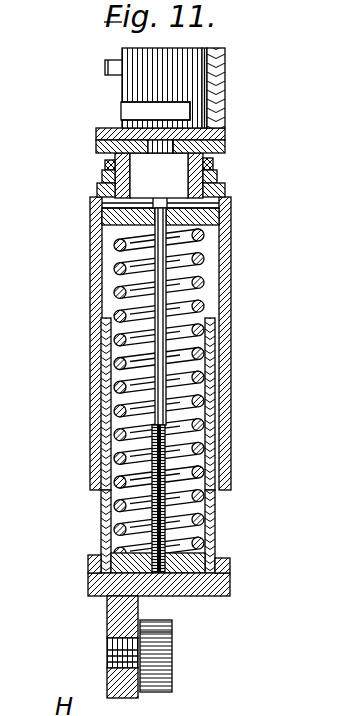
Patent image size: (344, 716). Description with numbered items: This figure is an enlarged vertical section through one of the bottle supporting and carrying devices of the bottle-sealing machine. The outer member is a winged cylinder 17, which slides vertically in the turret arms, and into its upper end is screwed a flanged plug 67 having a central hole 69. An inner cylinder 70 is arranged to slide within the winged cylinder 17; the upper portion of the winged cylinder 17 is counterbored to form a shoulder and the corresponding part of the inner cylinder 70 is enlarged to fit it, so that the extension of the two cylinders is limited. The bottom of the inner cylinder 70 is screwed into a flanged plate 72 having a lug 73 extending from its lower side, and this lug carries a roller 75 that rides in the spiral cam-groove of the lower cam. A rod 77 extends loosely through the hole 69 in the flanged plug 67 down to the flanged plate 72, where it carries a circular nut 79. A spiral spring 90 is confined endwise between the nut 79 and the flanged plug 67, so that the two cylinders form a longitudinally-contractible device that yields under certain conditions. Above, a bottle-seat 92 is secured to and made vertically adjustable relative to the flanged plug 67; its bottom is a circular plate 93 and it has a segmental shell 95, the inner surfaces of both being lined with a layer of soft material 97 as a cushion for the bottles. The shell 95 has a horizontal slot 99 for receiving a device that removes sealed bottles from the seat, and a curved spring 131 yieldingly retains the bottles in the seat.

The winged cylinder 17 is at (88, 398).
The flanged plug 67 is at (240, 213).
The central hole 69 is at (140, 232).
The inner cylinder 70 is at (226, 507).
The flanged plate 72 is at (207, 598).
The lug 73 is at (108, 605).
The roller 75 is at (172, 635).
The rod 77 is at (188, 322).
The circular nut 79 is at (217, 552).
The spiral spring 90 is at (207, 414).
The bottle-seat 92 is at (227, 90).
The circular plate 93 is at (78, 118).
The segmental shell 95 is at (230, 62).
The soft material 97 is at (207, 70).
The horizontal slot 99 is at (133, 111).
The curved spring 131 is at (104, 67).